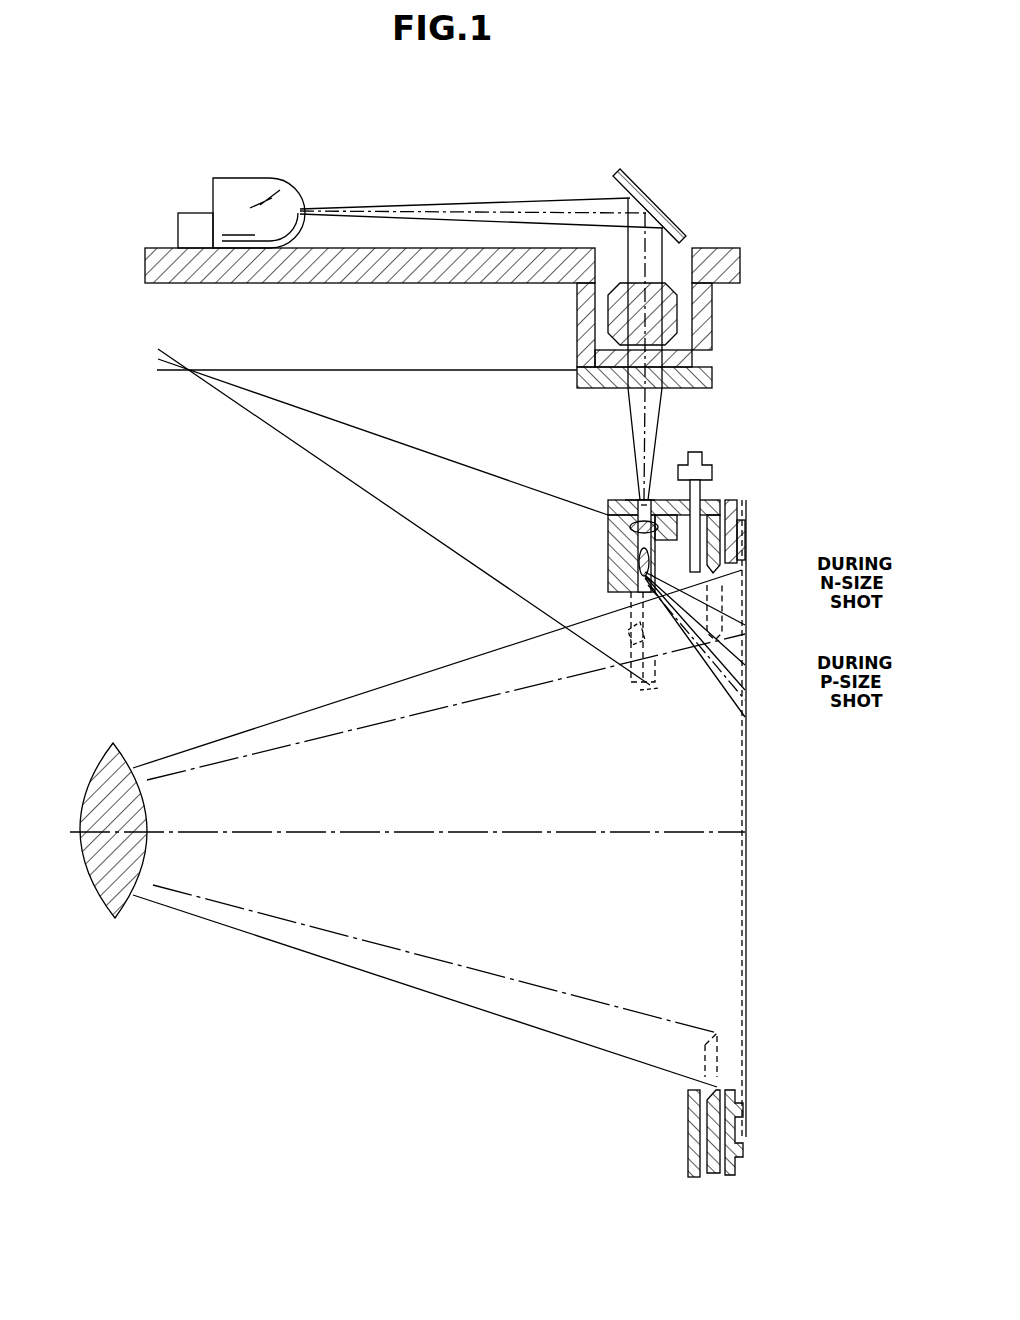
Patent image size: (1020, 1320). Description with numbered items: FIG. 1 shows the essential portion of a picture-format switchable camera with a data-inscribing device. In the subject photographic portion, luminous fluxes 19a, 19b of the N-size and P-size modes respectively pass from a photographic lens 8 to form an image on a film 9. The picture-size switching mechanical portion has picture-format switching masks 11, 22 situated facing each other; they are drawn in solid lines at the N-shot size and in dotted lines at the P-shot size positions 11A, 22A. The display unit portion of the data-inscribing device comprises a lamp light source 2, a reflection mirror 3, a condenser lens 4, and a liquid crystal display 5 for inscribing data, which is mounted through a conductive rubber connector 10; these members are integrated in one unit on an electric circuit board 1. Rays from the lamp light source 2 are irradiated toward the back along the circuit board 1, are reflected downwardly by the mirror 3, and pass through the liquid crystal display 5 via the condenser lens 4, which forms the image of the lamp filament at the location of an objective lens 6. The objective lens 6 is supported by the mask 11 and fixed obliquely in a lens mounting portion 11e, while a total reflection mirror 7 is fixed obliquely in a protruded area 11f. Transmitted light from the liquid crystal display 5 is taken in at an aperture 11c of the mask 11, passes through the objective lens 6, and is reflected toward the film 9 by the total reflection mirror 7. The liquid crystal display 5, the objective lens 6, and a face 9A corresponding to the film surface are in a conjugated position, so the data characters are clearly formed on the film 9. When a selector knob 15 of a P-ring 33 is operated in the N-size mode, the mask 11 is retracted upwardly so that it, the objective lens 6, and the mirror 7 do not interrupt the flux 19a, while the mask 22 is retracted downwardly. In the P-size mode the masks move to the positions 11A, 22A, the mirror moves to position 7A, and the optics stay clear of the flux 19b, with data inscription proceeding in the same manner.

The electric circuit board 1 is at (720, 256).
The lamp light source 2 is at (250, 192).
The reflection mirror 3 is at (645, 196).
The condenser lens 4 is at (615, 310).
The liquid crystal display 5 is at (690, 386).
The objective lens 6 is at (646, 500).
The total reflection mirror 7 is at (608, 560).
The total reflection mirror position in P-size mode 7A is at (610, 670).
The photographic lens 8 is at (125, 752).
The film 9 is at (748, 768).
The face corresponding to the film surface 9A is at (650, 688).
The conductive rubber connector 10 is at (712, 311).
The picture-format switching mask 11 is at (745, 555).
The P-size position of the mask 11A is at (745, 662).
The aperture of the mask 11c is at (635, 500).
The lens mounting portion 11e is at (632, 528).
The protruded area 11f is at (640, 560).
The selector knob 15 is at (672, 470).
The luminous flux of the N-size mode 19a is at (322, 705).
The luminous flux of the P-size mode 19b is at (425, 712).
The picture-format switching mask 22 is at (718, 1088).
The P-size position of the lower mask 22A is at (722, 1046).
The P-ring 33 is at (712, 488).